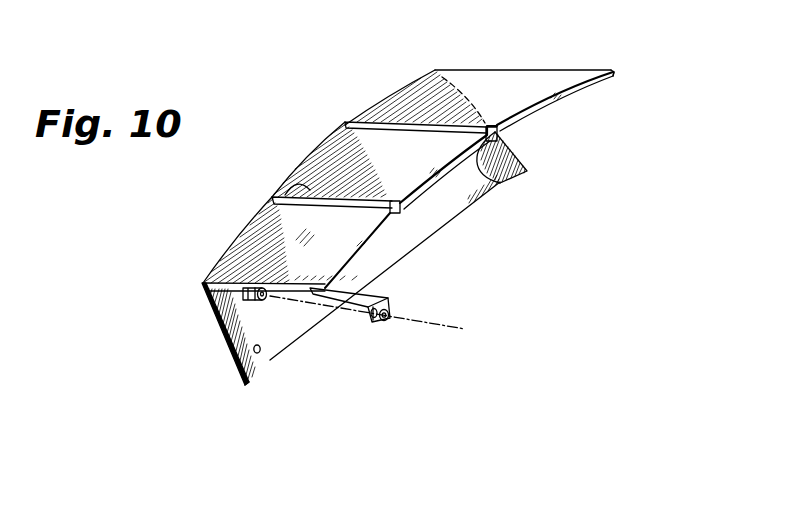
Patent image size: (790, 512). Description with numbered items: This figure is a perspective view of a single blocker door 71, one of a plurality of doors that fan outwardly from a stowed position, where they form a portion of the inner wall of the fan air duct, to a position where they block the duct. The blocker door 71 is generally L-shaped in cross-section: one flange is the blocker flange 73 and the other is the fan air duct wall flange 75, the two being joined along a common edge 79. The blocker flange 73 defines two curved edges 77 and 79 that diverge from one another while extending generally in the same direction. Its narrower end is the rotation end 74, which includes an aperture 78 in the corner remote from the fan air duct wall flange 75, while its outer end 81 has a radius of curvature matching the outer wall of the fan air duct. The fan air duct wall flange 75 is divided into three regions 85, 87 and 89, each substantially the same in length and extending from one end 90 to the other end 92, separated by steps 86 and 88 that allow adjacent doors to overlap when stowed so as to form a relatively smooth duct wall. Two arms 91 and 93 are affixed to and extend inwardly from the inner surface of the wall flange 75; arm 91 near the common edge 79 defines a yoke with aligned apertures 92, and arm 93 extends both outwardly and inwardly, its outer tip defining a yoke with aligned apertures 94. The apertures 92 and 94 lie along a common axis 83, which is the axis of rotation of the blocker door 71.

The blocker door 71 is at (289, 157).
The blocker flange 73 is at (235, 367).
The rotation end 74 is at (208, 333).
The fan air duct wall flange 75 is at (552, 67).
The curved edge 77 is at (445, 228).
The aperture 78 is at (261, 352).
The common edge 79 is at (318, 147).
The outer end 81 is at (517, 153).
The common axis 83 is at (404, 327).
The region 85 is at (238, 250).
The step 86 is at (396, 212).
The region 87 is at (293, 186).
The step 88 is at (500, 183).
The region 89 is at (436, 77).
The end 90 is at (210, 269).
The arm 91 is at (242, 292).
The end / aligned apertures 92 is at (268, 301).
The arm 93 is at (380, 324).
The aligned apertures 94 is at (392, 311).